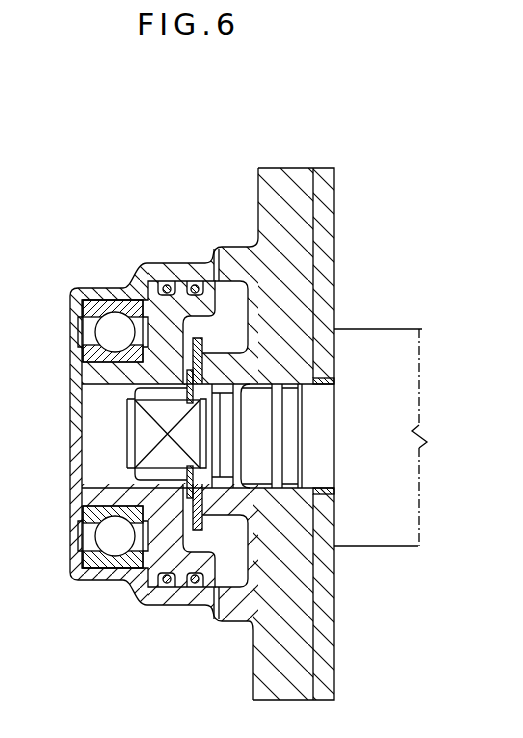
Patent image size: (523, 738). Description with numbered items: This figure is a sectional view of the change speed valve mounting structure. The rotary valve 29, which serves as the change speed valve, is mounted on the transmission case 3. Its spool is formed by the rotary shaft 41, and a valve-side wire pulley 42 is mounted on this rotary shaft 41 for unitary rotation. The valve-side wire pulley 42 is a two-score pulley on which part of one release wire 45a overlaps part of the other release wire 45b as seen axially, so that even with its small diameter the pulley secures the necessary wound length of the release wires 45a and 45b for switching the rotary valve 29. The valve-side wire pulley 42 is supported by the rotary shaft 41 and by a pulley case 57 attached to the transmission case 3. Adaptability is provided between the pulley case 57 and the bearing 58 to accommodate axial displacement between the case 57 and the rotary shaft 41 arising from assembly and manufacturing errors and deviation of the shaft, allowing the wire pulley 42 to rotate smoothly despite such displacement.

The transmission case 3 is at (320, 659).
The rotary valve 29 is at (405, 497).
The rotary shaft 41 is at (145, 430).
The valve-side wire pulley 42 is at (177, 583).
The release wire 45a is at (164, 285).
The release wire 45b is at (195, 285).
The pulley case 57 is at (90, 292).
The bearing 58 is at (90, 560).